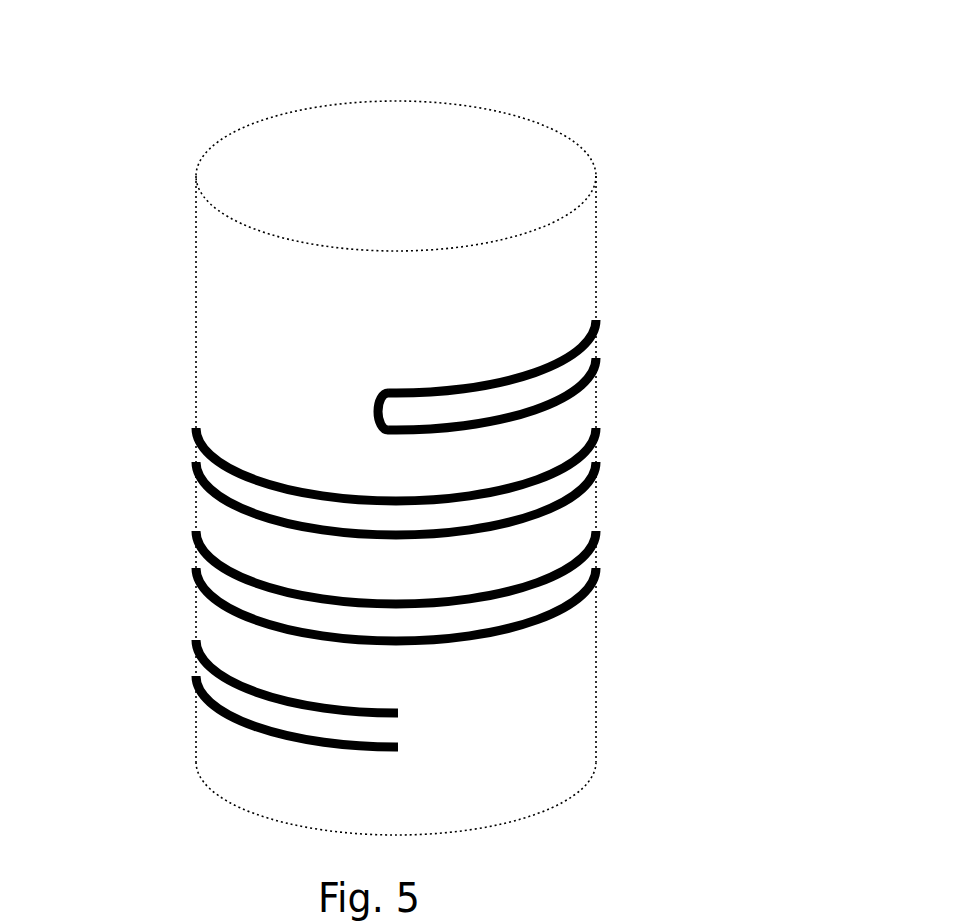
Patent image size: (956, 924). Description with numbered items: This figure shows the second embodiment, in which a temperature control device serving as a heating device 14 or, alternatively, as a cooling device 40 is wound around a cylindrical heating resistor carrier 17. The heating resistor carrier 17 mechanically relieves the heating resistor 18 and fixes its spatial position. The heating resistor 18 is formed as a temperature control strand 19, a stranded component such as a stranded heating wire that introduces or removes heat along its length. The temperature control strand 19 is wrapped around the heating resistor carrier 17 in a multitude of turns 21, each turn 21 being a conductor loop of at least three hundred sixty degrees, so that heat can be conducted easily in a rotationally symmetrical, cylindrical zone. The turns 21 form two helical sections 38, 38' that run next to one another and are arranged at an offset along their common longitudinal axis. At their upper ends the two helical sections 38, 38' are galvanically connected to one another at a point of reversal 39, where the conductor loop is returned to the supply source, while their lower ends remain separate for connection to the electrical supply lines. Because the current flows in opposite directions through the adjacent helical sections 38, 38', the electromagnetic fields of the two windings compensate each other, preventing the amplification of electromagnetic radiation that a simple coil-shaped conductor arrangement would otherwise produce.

The heating resistor carrier 17 is at (277, 237).
The heating resistor 18 is at (530, 425).
The temperature control strand 19 is at (530, 425).
The heating device 14 is at (530, 425).
The cooling device 40 is at (530, 425).
The turn 21 is at (582, 602).
The point of reversal 39 is at (383, 386).
The helical section 38 is at (218, 618).
The helical section 38' is at (233, 767).